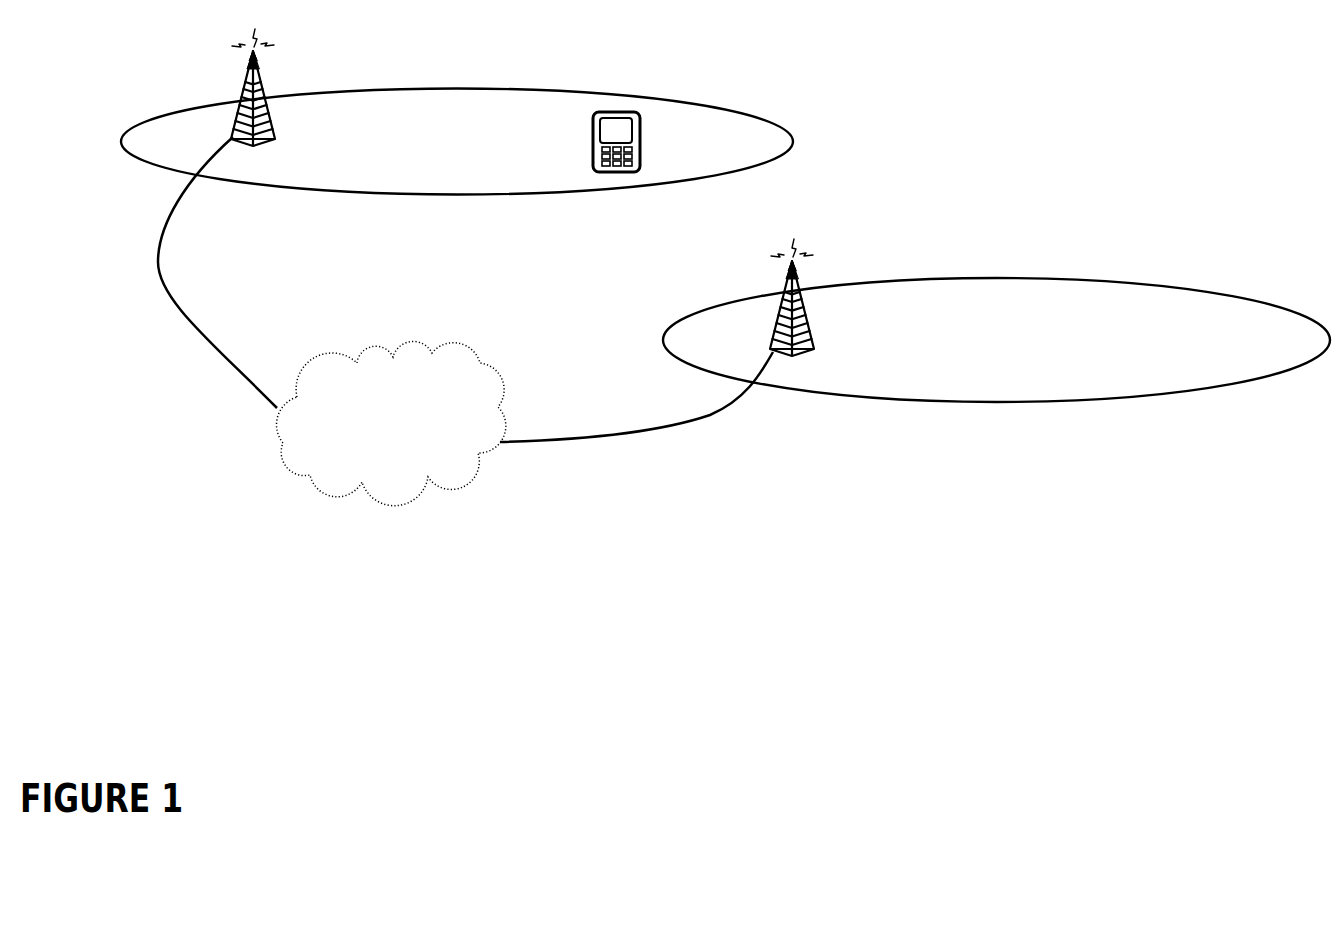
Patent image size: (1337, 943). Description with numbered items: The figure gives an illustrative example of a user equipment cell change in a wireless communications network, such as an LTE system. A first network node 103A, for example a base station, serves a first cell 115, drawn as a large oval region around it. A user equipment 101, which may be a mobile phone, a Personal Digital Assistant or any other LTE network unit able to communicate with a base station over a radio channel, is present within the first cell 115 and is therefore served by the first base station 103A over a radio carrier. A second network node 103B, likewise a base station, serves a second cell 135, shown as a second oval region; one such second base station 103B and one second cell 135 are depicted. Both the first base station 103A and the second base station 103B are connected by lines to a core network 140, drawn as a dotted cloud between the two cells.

The user equipment 101 is at (633, 162).
The first network node 103A is at (282, 103).
The second network node 103B is at (810, 315).
The first cell 115 is at (460, 195).
The second cell 135 is at (1153, 396).
The core network 140 is at (418, 493).